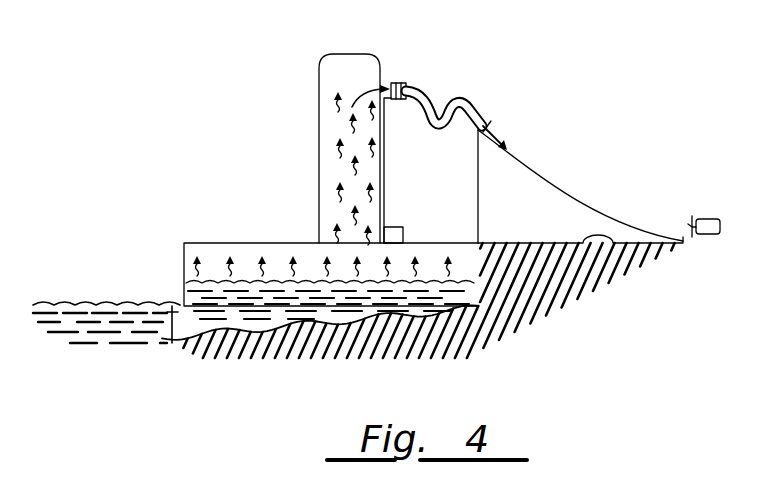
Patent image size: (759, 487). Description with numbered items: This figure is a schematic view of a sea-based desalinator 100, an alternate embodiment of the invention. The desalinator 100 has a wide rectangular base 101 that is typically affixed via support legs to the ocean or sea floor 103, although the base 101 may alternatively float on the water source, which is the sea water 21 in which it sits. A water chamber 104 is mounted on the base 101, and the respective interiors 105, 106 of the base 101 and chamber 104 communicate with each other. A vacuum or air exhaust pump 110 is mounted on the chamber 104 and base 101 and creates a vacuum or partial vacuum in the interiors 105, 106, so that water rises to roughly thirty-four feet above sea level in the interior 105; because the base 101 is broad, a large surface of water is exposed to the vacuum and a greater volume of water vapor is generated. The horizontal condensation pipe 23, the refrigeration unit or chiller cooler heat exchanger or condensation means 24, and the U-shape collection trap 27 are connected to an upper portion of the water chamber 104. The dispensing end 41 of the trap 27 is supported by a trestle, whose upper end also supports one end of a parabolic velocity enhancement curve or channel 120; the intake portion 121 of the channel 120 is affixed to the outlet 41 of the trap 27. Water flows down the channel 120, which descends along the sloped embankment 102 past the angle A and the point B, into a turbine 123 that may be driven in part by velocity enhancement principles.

The sea-based desalinator 100 is at (254, 122).
The water chamber 104 is at (336, 54).
The interior of water chamber 106 is at (327, 172).
The horizontal condensation pipe 23 is at (386, 81).
The condensation means 24 is at (404, 82).
The dispensing end of trap 41 is at (470, 101).
The intake portion of channel 121 is at (489, 124).
The U-shape collection trap 27 is at (446, 128).
The vacuum or air exhaust pump 110 is at (393, 226).
The sloped embankment 102 is at (535, 168).
The angle A is at (480, 178).
The velocity enhancement curve or channel 120 is at (673, 232).
The point B is at (617, 245).
The turbine 123 is at (708, 216).
The wide rectangular base 101 is at (218, 248).
The interior of base 105 is at (203, 252).
The sea water 21 is at (107, 303).
The ocean or sea floor 103 is at (317, 330).